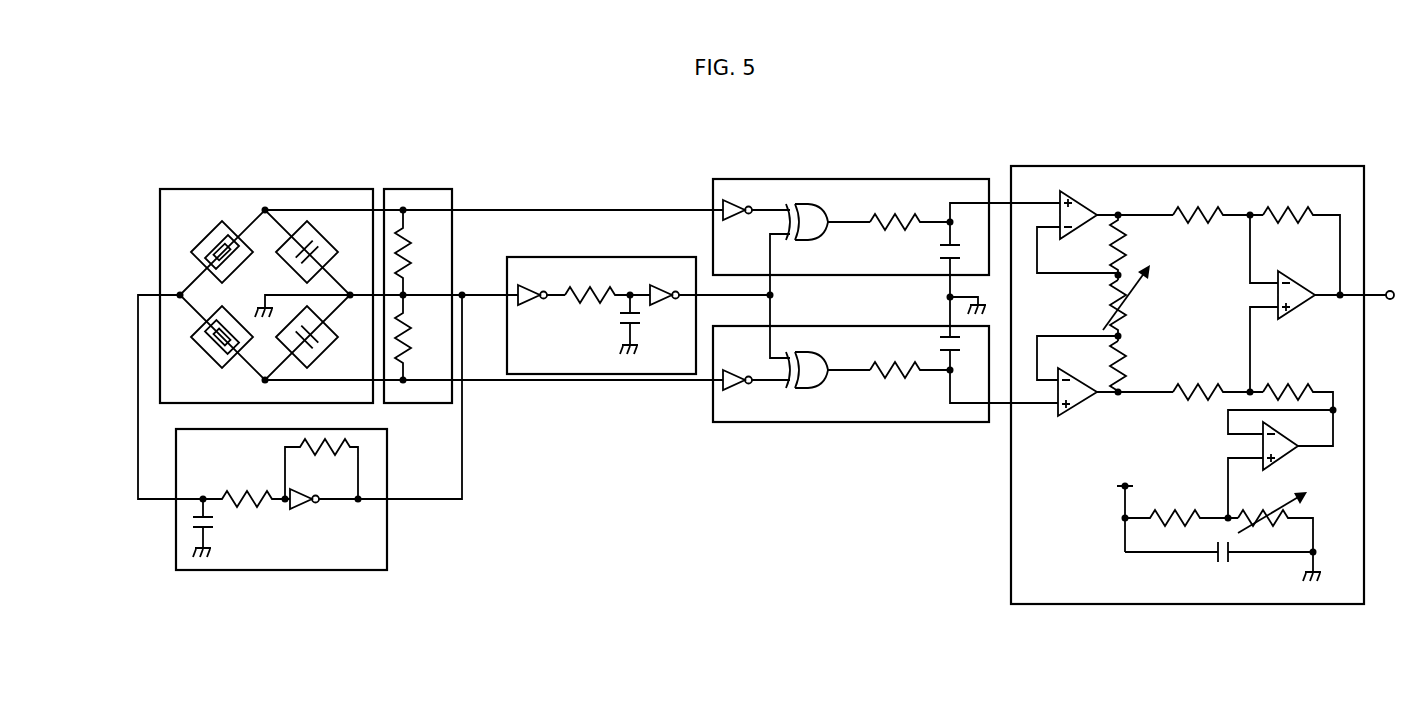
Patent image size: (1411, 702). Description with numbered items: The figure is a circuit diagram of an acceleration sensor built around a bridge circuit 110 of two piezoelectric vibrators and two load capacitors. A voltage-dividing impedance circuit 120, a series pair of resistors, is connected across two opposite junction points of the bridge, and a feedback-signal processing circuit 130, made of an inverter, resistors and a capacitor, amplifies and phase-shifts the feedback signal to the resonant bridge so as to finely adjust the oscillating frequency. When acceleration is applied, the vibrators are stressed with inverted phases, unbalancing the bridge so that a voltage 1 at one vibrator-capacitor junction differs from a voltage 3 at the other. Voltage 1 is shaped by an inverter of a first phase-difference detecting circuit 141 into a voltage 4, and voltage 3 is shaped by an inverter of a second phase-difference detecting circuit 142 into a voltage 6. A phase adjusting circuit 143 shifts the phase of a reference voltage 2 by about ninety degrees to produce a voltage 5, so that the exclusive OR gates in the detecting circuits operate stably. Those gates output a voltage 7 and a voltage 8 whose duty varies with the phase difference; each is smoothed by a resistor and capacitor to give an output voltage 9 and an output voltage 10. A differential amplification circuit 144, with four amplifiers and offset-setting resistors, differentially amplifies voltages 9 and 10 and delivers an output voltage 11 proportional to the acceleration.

The bridge circuit 110 is at (200, 189).
The voltage-dividing impedance circuit 120 is at (418, 189).
The feedback-signal processing circuit 130 is at (280, 571).
The first phase-difference detecting circuit 141 is at (765, 178).
The second phase-difference detecting circuit 142 is at (765, 423).
The phase adjusting circuit 143 is at (556, 257).
The differential amplification circuit 144 is at (1072, 166).
The voltage at junction of vibrator s1 and capacitor C1 1 is at (494, 195).
The voltage signal fed to phase adjusting circuit 2 is at (434, 282).
The voltage at junction of vibrator s2 and capacitor C2 3 is at (494, 365).
The voltage signal shaped by inverter IC4 4 is at (767, 193).
The phase-adjusted reference voltage signal 5 is at (787, 295).
The voltage signal shaped by inverter IC6 6 is at (763, 400).
The output of exclusive OR gate IC5 7 is at (850, 203).
The output of exclusive OR gate IC7 8 is at (848, 352).
The output voltage of first phase-difference detecting circuit 9 is at (1033, 183).
The output voltage of second phase-difference detecting circuit 10 is at (1032, 420).
The output voltage 11 is at (1389, 280).